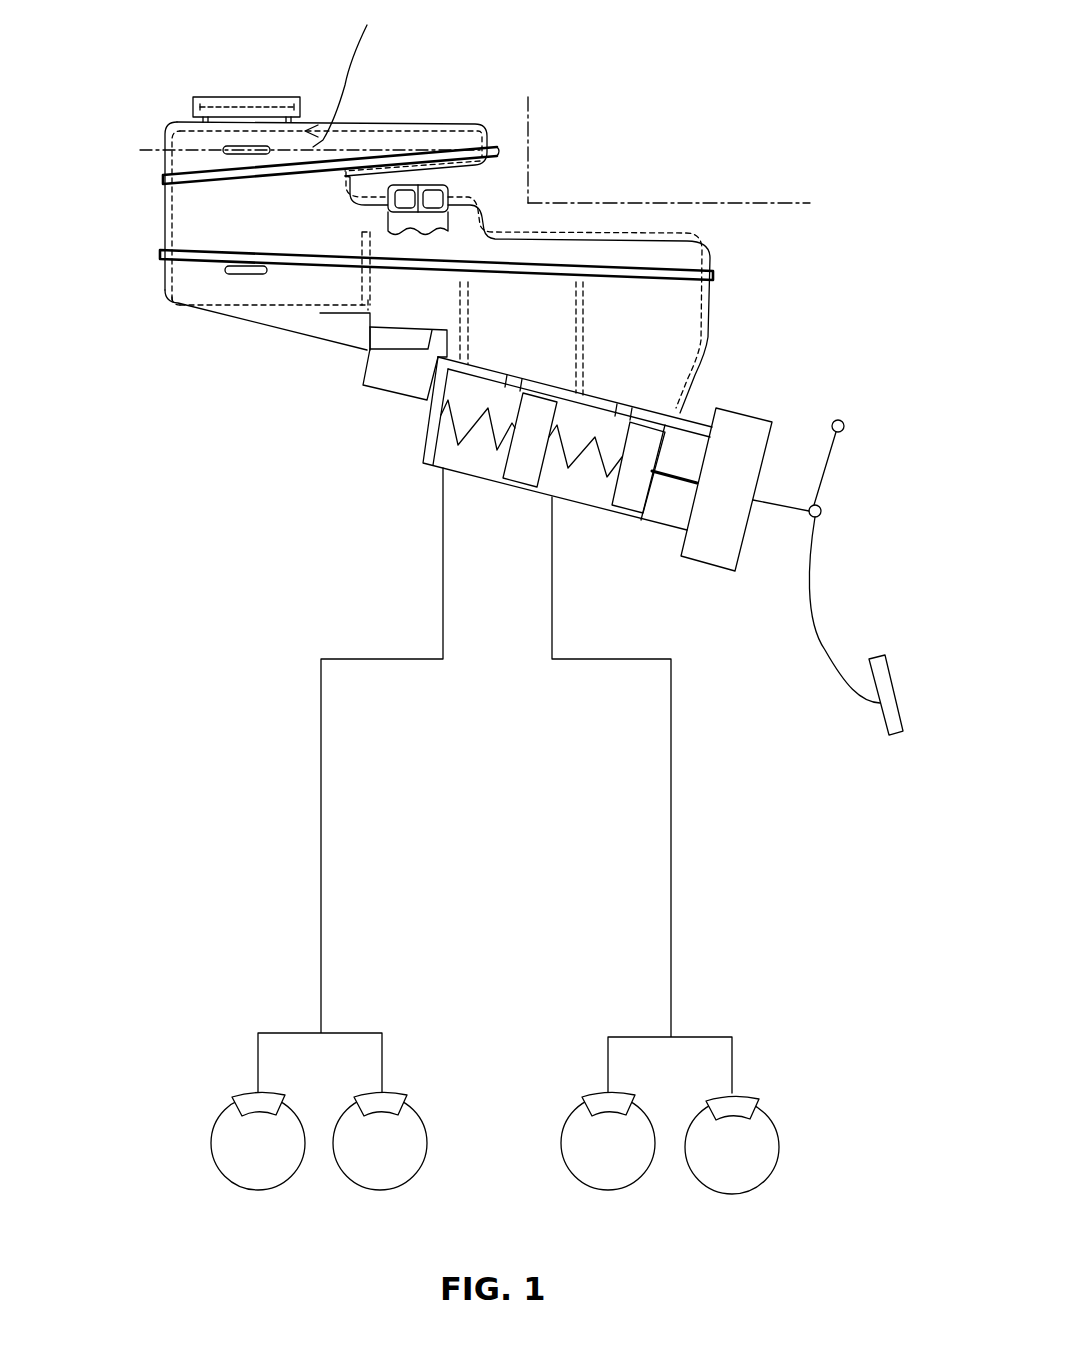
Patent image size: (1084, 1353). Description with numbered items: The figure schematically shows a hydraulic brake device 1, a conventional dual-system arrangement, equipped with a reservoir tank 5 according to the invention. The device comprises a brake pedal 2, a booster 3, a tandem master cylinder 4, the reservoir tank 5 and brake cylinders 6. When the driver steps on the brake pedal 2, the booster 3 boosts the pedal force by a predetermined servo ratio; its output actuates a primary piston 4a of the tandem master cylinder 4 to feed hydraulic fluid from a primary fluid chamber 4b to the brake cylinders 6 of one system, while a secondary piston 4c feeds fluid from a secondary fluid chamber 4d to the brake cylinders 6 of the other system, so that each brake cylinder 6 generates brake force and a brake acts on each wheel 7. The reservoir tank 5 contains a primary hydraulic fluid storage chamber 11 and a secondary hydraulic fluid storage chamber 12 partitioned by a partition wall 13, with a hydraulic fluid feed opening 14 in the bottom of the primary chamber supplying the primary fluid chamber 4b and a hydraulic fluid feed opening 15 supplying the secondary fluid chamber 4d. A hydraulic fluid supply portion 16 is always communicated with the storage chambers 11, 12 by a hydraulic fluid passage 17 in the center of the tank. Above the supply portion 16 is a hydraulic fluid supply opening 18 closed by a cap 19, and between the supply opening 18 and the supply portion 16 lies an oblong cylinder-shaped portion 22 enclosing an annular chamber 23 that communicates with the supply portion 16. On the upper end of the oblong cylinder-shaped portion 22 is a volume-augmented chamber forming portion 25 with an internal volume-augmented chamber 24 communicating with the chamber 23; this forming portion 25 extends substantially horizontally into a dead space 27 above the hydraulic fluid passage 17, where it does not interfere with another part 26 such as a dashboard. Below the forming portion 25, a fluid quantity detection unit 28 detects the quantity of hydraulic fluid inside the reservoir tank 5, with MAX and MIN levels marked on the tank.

The hydraulic brake device 1 is at (338, 584).
The brake pedal 2 is at (889, 737).
The booster 3 is at (739, 426).
The tandem master cylinder 4 is at (445, 458).
The primary piston 4a is at (637, 500).
The primary fluid chamber 4b is at (583, 493).
The secondary piston 4c is at (523, 473).
The secondary fluid chamber 4d is at (477, 472).
The reservoir tank 5 is at (178, 215).
The brake cylinders 6 is at (363, 1092).
The wheel 7 is at (262, 1192).
The primary hydraulic fluid storage chamber 11 is at (673, 345).
The secondary hydraulic fluid storage chamber 12 is at (455, 330).
The partition wall 13 is at (453, 332).
The hydraulic fluid feed opening 14 is at (620, 397).
The hydraulic fluid feed opening 15 is at (515, 373).
The hydraulic fluid supply portion 16 is at (193, 290).
The hydraulic fluid passage 17 is at (372, 218).
The hydraulic fluid supply opening 18 is at (232, 97).
The cap 19 is at (287, 97).
The oblong cylinder-shaped portion 22 is at (357, 187).
The annular chamber 23 is at (193, 167).
The volume-augmented chamber 24 is at (393, 117).
The volume-augmented chamber forming portion 25 is at (438, 124).
The another part 26 is at (757, 205).
The dead space 27 is at (515, 153).
The fluid quantity detection unit 28 is at (448, 191).